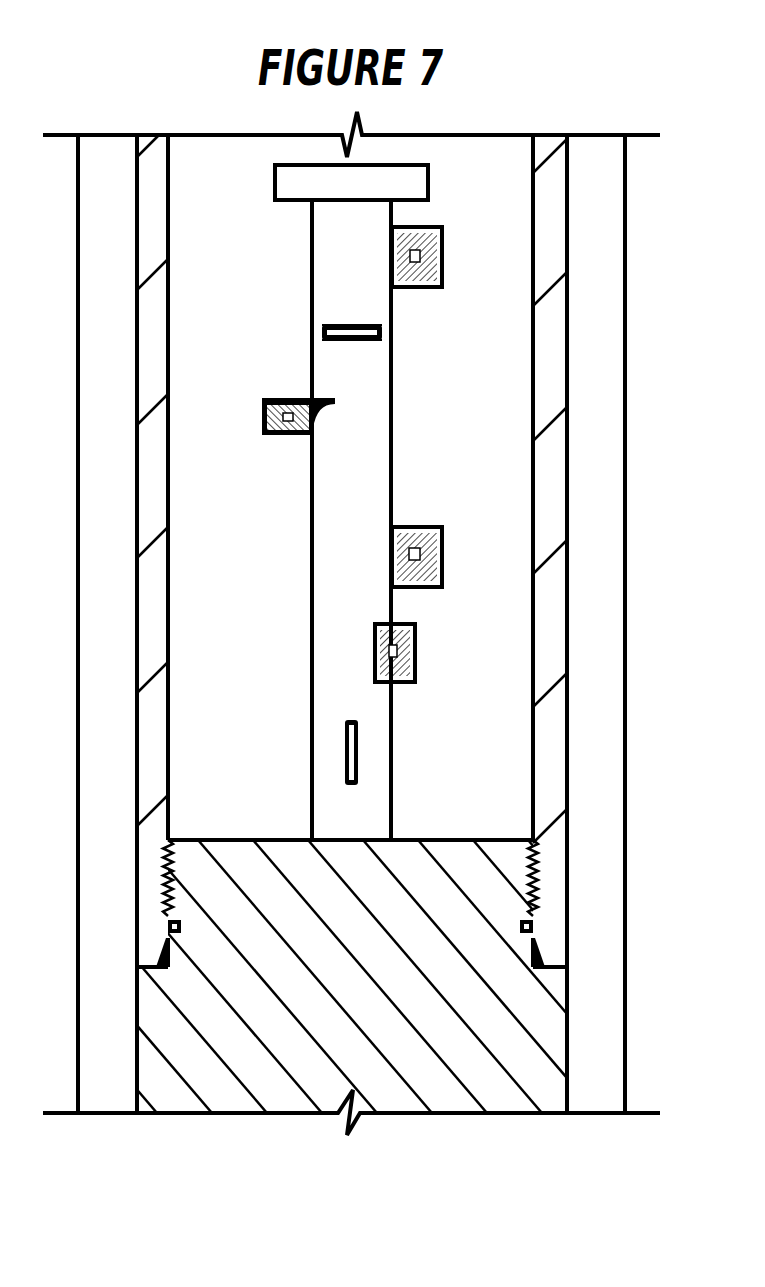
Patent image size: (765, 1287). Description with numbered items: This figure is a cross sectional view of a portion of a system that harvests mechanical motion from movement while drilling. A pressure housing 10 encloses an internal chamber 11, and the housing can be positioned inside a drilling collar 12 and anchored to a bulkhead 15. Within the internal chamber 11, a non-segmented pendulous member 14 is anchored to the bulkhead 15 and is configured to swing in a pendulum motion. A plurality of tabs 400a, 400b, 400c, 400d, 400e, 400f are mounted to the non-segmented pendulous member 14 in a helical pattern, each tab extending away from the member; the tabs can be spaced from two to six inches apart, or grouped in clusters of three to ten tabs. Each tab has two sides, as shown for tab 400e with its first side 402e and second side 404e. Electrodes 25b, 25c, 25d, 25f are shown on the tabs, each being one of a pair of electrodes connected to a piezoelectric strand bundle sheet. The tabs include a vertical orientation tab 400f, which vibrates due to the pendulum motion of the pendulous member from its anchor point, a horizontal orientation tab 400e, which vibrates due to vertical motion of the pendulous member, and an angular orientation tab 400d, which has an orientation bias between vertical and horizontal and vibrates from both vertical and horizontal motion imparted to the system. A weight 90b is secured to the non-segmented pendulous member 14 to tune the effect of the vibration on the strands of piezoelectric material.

The pressure housing 10 is at (137, 410).
The internal chamber 11 is at (176, 228).
The drilling collar 12 is at (625, 408).
The non-segmented pendulous member 14 is at (392, 432).
The bulkhead 15 is at (137, 1044).
The weight 90b is at (428, 183).
The tab 400a is at (350, 720).
The tab 400b is at (415, 651).
The tab 400c is at (442, 554).
The angular orientation tab 400d is at (262, 418).
The horizontal orientation tab 400e is at (322, 332).
The vertical orientation tab 400f is at (442, 256).
The first side 402e is at (336, 321).
The second side 404e is at (336, 345).
The electrode 25b is at (392, 645).
The electrode 25c is at (414, 548).
The electrode 25d is at (288, 421).
The electrode 25f is at (415, 262).